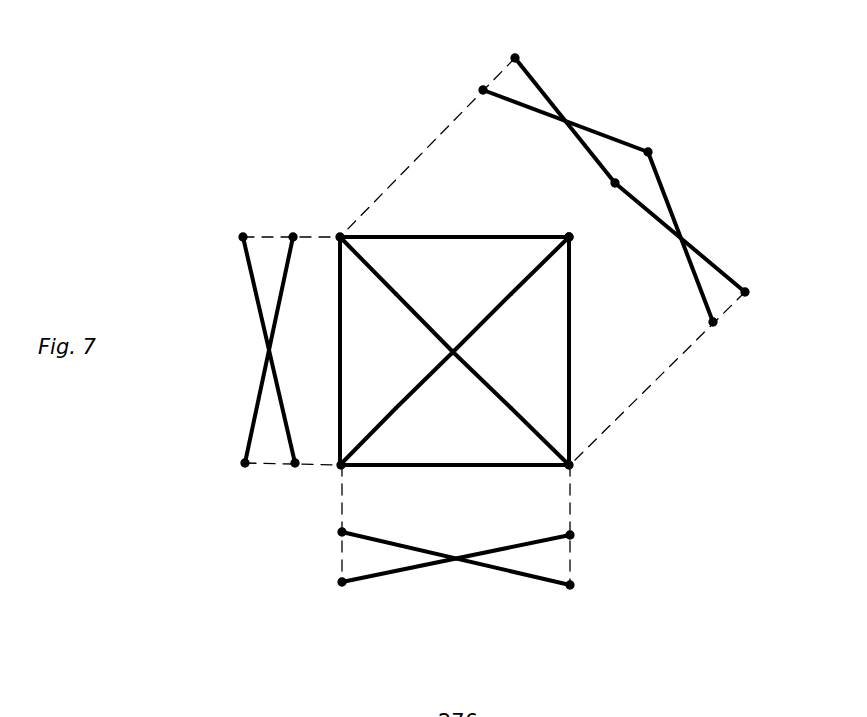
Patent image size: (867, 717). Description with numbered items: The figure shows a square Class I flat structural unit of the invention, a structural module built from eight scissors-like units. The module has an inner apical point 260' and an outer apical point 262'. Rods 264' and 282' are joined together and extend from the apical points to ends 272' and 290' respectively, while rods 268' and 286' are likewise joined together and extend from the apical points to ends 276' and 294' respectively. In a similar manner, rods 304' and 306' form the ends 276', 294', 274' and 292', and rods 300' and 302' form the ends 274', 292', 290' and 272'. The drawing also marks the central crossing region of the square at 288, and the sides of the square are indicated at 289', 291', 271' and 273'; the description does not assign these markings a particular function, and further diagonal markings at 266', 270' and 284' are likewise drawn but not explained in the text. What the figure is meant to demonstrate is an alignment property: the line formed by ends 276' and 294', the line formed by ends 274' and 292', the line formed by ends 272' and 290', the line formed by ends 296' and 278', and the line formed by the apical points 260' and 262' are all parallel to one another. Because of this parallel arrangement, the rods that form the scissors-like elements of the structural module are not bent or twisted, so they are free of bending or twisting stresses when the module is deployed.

The inner apical point 260' is at (648, 144).
The outer apical point 262' is at (582, 270).
The rod 264' is at (609, 298).
The link member 266' is at (415, 380).
The rod 268' is at (477, 169).
The link member 270' is at (505, 323).
The side member 271' is at (602, 294).
The end 272' is at (653, 456).
The side member 273' is at (602, 405).
The end 274' is at (296, 527).
The end 276' is at (351, 133).
The end 278' is at (592, 227).
The rod 282' is at (610, 308).
The link member 284' is at (390, 436).
The rod 286' is at (522, 215).
The link member 288 is at (520, 285).
The side member 289' is at (512, 205).
The end 290' is at (669, 414).
The side member 291' is at (397, 215).
The end 292' is at (331, 500).
The end 294' is at (365, 149).
The end 296' is at (596, 216).
The rod 300' is at (455, 541).
The rod 302' is at (456, 541).
The rod 304' is at (258, 350).
The rod 306' is at (259, 351).